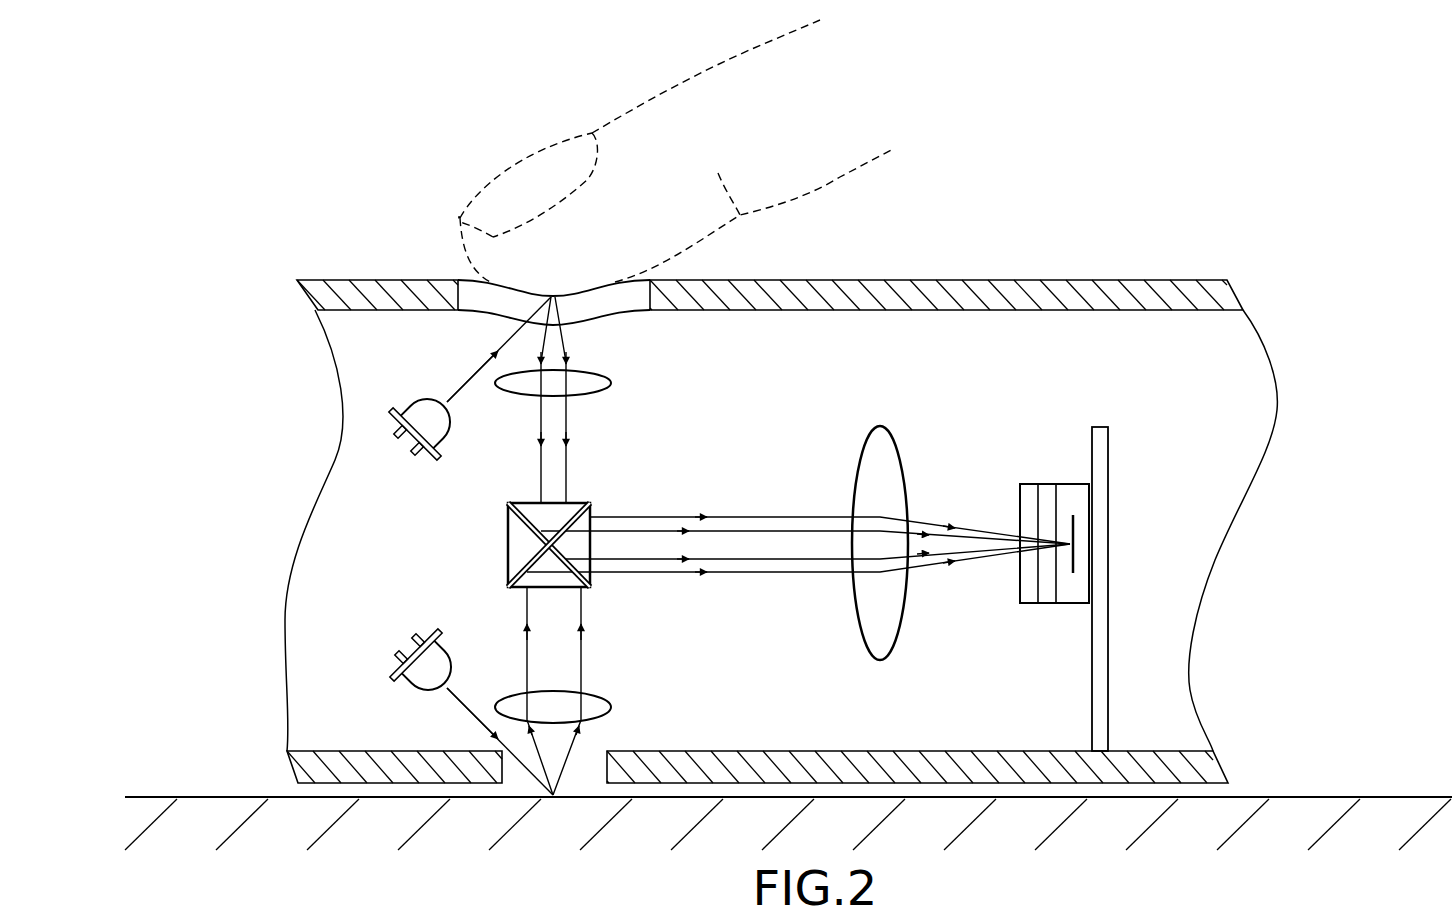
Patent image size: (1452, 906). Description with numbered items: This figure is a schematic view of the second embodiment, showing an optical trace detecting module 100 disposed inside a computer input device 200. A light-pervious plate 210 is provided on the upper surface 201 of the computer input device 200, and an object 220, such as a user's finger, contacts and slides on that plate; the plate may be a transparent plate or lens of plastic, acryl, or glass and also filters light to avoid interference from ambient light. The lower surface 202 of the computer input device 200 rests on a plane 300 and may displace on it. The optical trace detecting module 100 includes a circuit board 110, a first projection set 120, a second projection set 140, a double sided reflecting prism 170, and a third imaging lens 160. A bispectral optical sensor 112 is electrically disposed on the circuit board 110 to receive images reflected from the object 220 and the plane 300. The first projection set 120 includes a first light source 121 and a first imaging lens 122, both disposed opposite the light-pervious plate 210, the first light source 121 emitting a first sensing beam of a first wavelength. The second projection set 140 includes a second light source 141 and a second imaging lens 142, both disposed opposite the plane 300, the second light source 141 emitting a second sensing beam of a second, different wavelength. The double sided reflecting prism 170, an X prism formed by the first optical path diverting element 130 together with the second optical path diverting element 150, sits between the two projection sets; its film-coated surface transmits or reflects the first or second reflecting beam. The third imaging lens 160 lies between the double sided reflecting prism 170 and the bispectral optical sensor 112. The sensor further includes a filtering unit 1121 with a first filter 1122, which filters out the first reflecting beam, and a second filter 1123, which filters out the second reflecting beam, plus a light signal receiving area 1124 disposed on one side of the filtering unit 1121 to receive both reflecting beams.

The optical trace detecting module 100 is at (783, 364).
The circuit board 110 is at (1099, 430).
The bispectral optical sensor 112 is at (1069, 478).
The filtering unit 1121 is at (948, 689).
The first filter 1122 is at (1028, 585).
The second filter 1123 is at (1048, 592).
The light signal receiving area 1124 is at (1073, 560).
The first projection set 120 is at (173, 367).
The first light source 121 is at (425, 413).
The first imaging lens 122 is at (513, 387).
The first optical path diverting element 130 is at (520, 516).
The second projection set 140 is at (173, 600).
The second light source 141 is at (427, 678).
The second imaging lens 142 is at (510, 690).
The second optical path diverting element 150 is at (520, 576).
The third imaging lens 160 is at (880, 435).
The double sided reflecting prism 170 is at (425, 508).
The computer input device 200 is at (1188, 278).
The upper surface 201 is at (1005, 290).
The lower surface 202 is at (1195, 766).
The light-pervious plate 210 is at (472, 293).
The object 220 is at (633, 128).
The plane 300 is at (1350, 792).